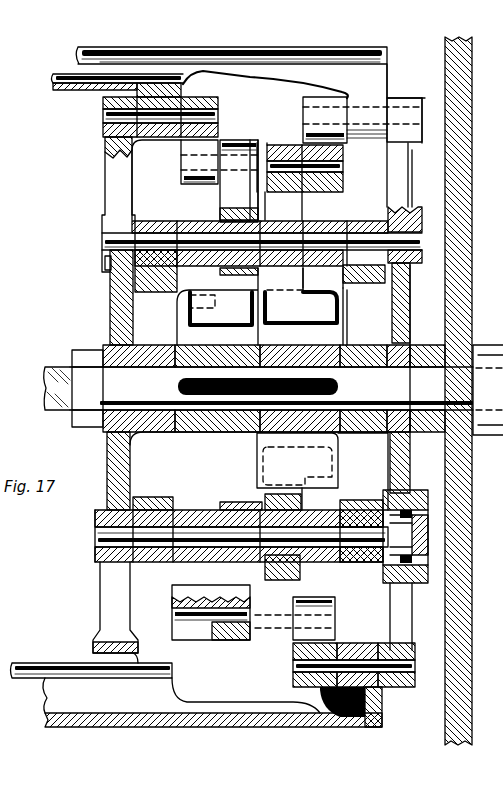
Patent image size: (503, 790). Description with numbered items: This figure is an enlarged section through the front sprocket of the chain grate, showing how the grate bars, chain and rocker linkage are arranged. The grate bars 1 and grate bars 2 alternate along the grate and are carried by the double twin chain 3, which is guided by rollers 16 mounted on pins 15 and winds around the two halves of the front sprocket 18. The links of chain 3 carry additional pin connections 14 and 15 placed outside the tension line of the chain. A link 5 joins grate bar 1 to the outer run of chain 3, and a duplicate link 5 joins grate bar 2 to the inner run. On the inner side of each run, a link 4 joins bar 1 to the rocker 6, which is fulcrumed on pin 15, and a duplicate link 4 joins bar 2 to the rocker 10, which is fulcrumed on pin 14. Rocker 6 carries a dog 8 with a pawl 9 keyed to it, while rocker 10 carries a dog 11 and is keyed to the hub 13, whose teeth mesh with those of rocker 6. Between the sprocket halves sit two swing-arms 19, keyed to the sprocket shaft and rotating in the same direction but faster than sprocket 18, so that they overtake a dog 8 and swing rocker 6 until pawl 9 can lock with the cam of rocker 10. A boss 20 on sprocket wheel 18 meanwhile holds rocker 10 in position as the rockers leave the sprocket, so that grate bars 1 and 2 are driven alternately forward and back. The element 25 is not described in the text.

The grate bar 1 is at (128, 48).
The grate bar 2 is at (52, 80).
The double twin chain 3 is at (150, 215).
The link 4 is at (183, 155).
The link 5 is at (108, 182).
The rocker 6 is at (302, 207).
The dog 8 is at (338, 312).
The pawl 9 is at (232, 502).
The rocker 10 is at (216, 199).
The dog 11 is at (222, 291).
The hub 13 is at (298, 281).
The pin connection 14 is at (353, 237).
The pin connection 15 is at (100, 540).
The roller 16 is at (410, 490).
The front sprocket 18 is at (112, 333).
The swing-arm 19 is at (338, 326).
The boss 20 is at (195, 326).
The pin 25 is at (105, 263).